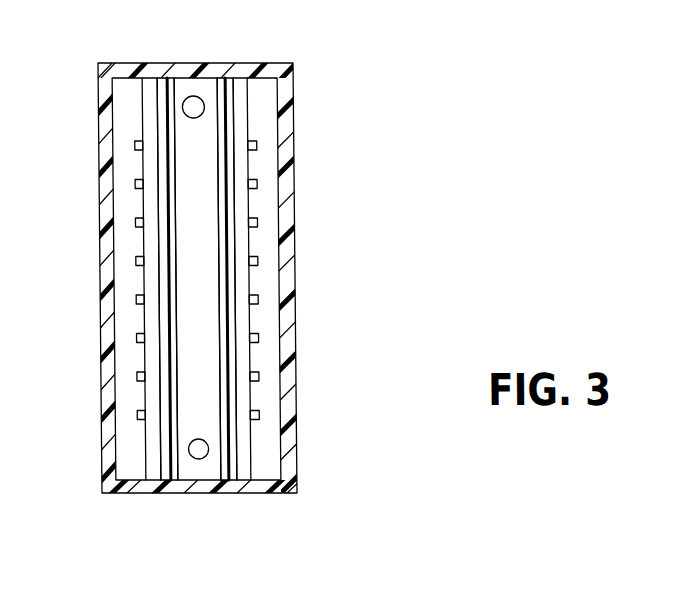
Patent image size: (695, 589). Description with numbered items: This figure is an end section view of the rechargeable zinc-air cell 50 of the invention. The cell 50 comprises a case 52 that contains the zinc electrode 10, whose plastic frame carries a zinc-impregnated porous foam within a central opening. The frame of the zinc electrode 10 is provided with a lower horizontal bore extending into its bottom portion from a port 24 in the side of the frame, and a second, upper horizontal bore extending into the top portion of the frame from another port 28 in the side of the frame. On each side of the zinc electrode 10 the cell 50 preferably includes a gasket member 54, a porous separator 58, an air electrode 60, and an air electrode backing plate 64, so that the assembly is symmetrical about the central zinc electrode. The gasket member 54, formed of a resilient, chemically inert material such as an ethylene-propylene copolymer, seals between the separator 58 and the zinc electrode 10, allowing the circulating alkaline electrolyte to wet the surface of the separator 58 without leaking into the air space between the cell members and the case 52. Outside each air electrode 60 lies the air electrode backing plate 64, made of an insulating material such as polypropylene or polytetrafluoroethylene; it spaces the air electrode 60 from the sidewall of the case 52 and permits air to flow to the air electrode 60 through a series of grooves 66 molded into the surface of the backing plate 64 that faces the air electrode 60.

The zinc electrode 10 is at (208, 88).
The port 24 is at (194, 455).
The port 28 is at (191, 97).
The zinc-air cell 50 is at (380, 177).
The case 52 is at (293, 274).
The gasket member 54 is at (169, 460).
The porous separator 58 is at (158, 457).
The air electrode 60 is at (150, 87).
The air electrode backing plate 64 is at (267, 128).
The grooves 66 is at (130, 298).